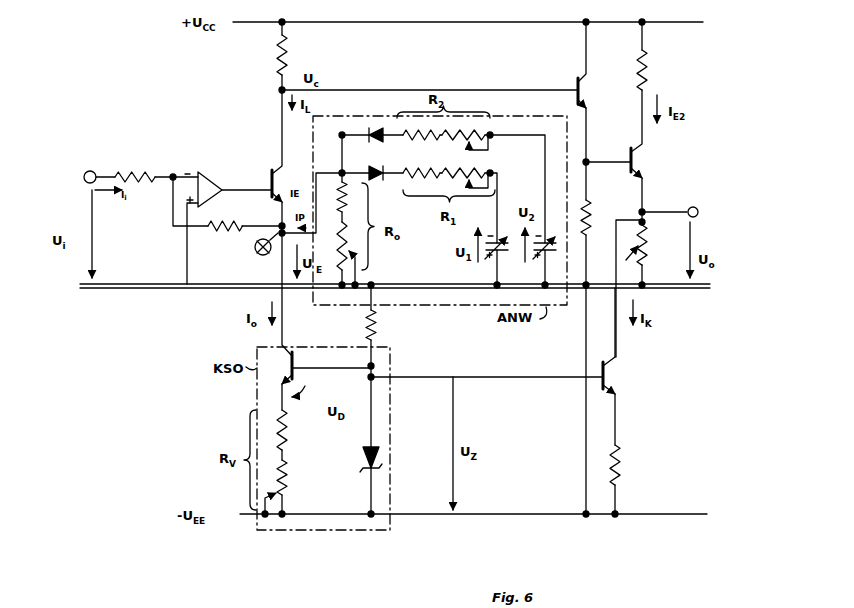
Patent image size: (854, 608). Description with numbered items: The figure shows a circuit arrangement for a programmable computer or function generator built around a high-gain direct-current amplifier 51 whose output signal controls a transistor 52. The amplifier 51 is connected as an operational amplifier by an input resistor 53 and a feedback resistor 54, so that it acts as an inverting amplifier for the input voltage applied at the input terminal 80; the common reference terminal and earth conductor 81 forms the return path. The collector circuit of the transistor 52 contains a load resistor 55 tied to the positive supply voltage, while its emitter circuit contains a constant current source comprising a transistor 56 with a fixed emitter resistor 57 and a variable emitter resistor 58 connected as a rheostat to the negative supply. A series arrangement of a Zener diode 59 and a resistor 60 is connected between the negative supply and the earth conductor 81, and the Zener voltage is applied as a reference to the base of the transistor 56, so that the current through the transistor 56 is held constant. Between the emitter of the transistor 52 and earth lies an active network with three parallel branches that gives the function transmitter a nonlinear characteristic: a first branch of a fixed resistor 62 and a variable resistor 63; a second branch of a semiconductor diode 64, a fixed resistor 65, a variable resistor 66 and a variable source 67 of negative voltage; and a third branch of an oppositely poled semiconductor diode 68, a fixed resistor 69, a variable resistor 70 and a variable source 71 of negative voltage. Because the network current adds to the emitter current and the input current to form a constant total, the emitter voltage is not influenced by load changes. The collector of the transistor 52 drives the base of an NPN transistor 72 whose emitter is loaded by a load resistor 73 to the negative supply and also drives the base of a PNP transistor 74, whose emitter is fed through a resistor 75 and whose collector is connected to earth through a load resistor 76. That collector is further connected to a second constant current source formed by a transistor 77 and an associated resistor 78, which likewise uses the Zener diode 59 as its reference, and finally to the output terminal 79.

The direct-current amplifier 51 is at (203, 179).
The transistor 52 is at (267, 176).
The resistor 53 is at (138, 178).
The resistor 54 is at (226, 228).
The load resistor 55 is at (277, 59).
The transistor 56 is at (296, 362).
The fixed emitter resistor 57 is at (289, 433).
The variable emitter resistor 58 is at (289, 478).
The Zener diode 59 is at (366, 462).
The resistor 60 is at (383, 325).
The fixed resistor 62 is at (351, 197).
The variable resistor 63 is at (351, 255).
The semi-conductor diode 64 is at (361, 165).
The fixed resistor 65 is at (421, 166).
The variable resistor 66 is at (465, 171).
The variable source of negative voltage 67 is at (504, 255).
The semi-conductor diode 68 is at (358, 130).
The fixed resistor 69 is at (421, 128).
The variable resistor 70 is at (465, 133).
The variable source of negative voltage 71 is at (551, 255).
The transistor 72 is at (569, 86).
The load resistor 73 is at (589, 211).
The PNP transistor 74 is at (626, 154).
The resistor 75 is at (649, 56).
The load resistor 76 is at (645, 288).
The transistor 77 is at (612, 375).
The resistor 78 is at (623, 453).
The output terminal 79 is at (684, 207).
The input terminal 80 is at (89, 169).
The earth conductor 81 is at (138, 291).